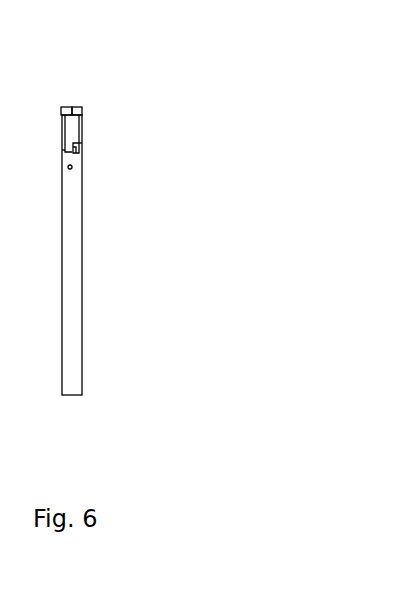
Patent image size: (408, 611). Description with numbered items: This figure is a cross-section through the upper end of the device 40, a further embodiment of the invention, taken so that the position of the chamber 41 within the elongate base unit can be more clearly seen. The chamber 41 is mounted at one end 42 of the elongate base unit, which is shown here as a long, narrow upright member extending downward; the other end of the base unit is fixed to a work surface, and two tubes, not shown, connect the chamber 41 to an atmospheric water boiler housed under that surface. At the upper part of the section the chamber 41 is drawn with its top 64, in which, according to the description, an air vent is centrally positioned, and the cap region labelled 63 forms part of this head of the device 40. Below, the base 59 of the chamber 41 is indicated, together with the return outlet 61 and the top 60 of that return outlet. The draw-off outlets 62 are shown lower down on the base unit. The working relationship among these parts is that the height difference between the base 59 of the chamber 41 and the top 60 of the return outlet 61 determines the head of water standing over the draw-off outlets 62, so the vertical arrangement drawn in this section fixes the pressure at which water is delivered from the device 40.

The device 40 is at (171, 144).
The chamber 41 is at (81, 127).
The one end of the elongate base unit 42 is at (75, 283).
The base of the chamber 59 is at (62, 150).
The top of the return outlet 60 is at (80, 139).
The return outlet 61 is at (82, 150).
The draw-off outlets 62 is at (63, 170).
The head portion 63 is at (68, 107).
The top of the chamber 64 is at (76, 107).